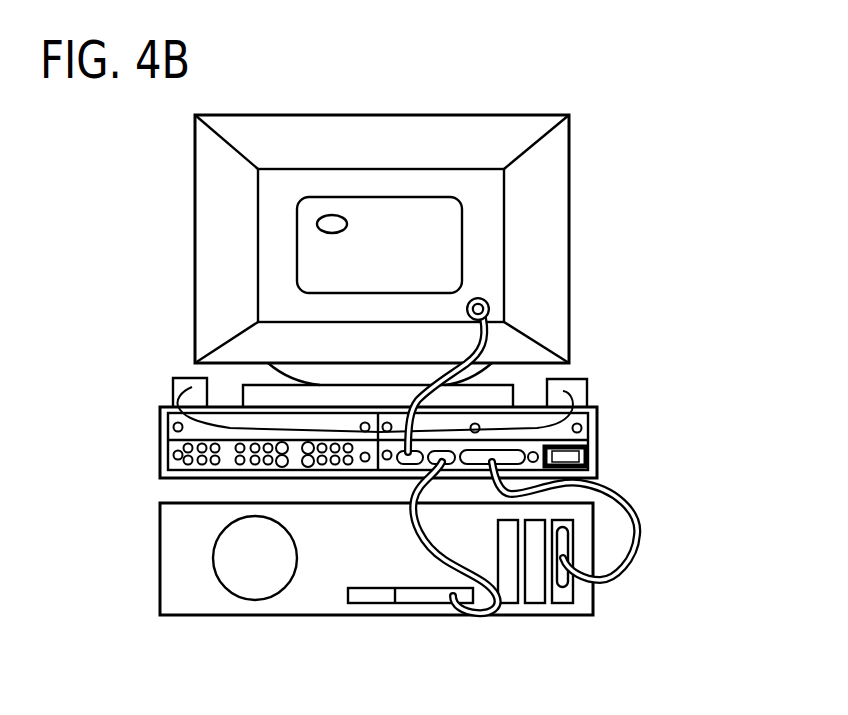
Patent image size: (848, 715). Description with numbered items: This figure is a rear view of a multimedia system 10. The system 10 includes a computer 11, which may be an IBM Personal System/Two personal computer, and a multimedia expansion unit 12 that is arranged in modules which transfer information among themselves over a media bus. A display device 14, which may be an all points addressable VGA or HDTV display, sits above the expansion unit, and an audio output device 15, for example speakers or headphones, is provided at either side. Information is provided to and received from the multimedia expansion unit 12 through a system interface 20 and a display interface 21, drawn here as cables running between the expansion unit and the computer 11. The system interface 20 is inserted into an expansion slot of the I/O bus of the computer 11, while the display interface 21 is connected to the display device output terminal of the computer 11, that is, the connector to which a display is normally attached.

The multimedia system 10 is at (648, 106).
The computer 11 is at (160, 547).
The multimedia expansion unit 12 is at (162, 423).
The display device 14 is at (570, 237).
The audio output device 15 is at (172, 398).
The system interface 20 is at (643, 542).
The display interface 21 is at (490, 613).